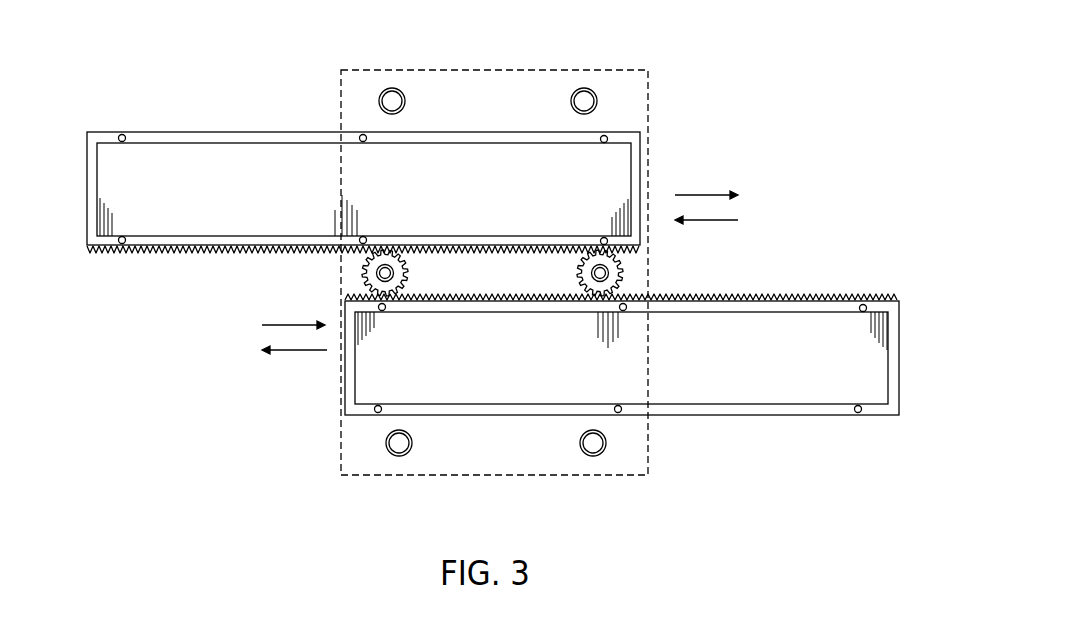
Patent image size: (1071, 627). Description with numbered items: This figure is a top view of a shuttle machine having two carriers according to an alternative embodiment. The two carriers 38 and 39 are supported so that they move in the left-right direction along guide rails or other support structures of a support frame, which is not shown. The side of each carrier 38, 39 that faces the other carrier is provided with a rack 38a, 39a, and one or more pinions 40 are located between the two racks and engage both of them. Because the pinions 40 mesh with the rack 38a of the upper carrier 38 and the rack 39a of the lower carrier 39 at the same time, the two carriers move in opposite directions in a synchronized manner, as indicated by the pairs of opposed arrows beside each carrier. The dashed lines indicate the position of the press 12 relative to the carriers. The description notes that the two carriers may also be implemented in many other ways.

The press 12 is at (637, 477).
The carrier 38 is at (183, 153).
The rack 38a is at (153, 250).
The carrier 39 is at (814, 386).
The rack 39a is at (831, 296).
The pinion 40 is at (363, 269).